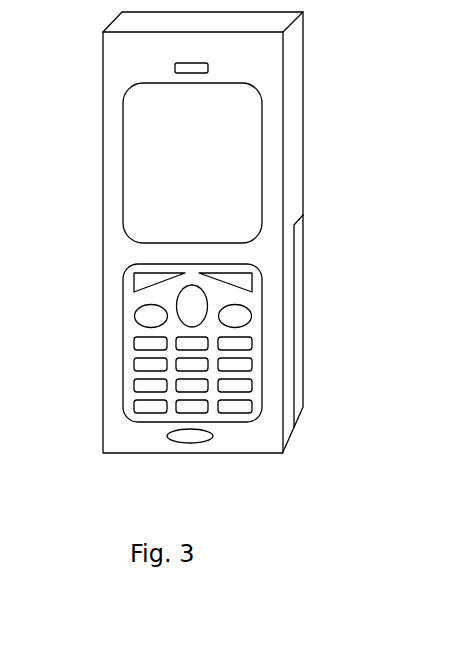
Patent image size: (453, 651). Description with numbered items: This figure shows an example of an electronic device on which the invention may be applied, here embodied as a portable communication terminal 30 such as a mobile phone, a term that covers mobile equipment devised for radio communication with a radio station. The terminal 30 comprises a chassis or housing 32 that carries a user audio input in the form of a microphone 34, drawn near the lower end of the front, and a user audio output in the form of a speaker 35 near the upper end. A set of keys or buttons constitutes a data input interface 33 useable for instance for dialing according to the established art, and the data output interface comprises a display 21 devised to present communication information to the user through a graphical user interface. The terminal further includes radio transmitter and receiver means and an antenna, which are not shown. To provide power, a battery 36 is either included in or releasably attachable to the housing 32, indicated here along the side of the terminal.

The portable communication terminal 30 is at (213, 257).
The housing 32 is at (103, 60).
The display 21 is at (200, 171).
The speaker 35 is at (183, 67).
The data input interface 33 is at (128, 309).
The microphone 34 is at (193, 440).
The battery 36 is at (295, 350).